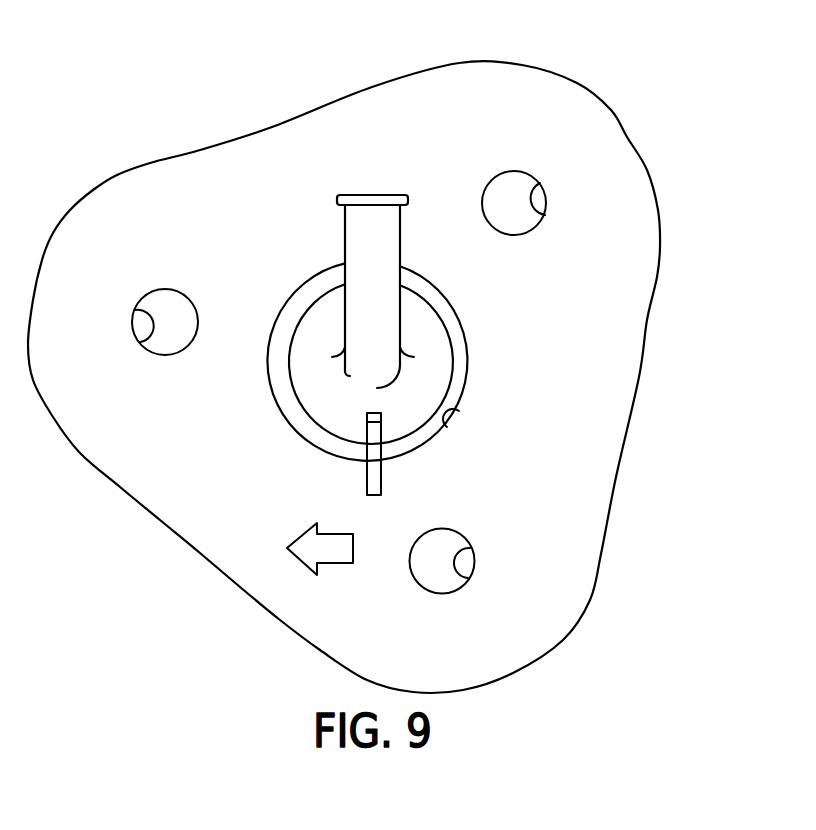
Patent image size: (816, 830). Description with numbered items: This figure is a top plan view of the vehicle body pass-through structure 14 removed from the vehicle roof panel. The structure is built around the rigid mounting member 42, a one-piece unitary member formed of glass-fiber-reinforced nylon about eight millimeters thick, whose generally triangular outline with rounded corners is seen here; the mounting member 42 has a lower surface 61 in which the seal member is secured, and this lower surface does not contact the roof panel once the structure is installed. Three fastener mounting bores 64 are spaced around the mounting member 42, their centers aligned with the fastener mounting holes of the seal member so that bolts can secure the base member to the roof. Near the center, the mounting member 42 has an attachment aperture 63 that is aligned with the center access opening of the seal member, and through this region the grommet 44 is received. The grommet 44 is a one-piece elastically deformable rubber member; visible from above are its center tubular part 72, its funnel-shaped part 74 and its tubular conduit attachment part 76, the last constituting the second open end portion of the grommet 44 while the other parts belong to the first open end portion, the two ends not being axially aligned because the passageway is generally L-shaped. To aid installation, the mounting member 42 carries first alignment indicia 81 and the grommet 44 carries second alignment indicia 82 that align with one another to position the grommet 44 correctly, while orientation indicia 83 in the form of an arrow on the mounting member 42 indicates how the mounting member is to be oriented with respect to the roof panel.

The vehicle body pass-through structure 14 is at (599, 50).
The rigid mounting member 42 is at (639, 375).
The grommet 44 is at (443, 306).
The lower surface 61 is at (616, 477).
The attachment aperture 63 is at (447, 427).
The fastener mounting bores 64 is at (540, 183).
The center tubular part 72 is at (463, 363).
The funnel-shaped part 74 is at (320, 332).
The tubular conduit attachment part 76 is at (344, 237).
The first alignment indicia 81 is at (367, 478).
The second alignment indicia 82 is at (367, 425).
The orientation indicia 83 is at (335, 548).